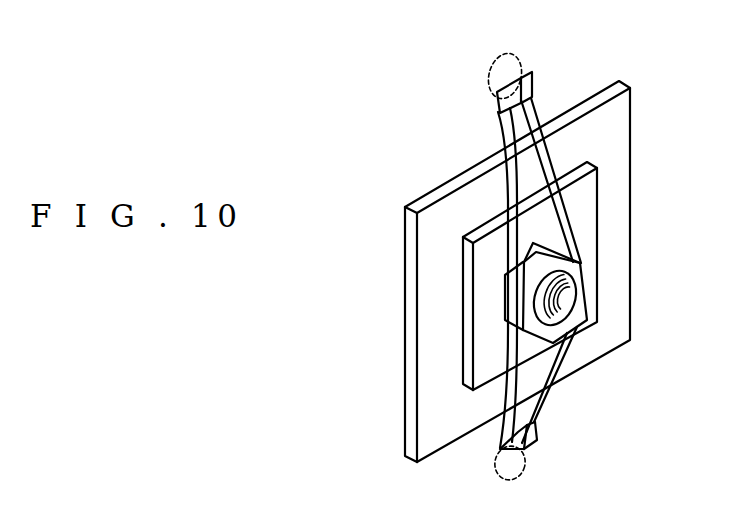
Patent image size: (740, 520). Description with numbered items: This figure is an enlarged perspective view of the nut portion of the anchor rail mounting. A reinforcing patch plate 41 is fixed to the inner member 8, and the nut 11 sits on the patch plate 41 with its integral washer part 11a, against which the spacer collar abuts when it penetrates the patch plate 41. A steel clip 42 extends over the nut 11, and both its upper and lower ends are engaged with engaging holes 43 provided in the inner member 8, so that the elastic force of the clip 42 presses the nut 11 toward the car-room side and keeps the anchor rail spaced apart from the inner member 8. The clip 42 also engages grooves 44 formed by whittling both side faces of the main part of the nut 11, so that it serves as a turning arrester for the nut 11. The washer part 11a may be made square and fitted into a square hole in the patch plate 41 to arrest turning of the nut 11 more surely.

The inner member 8 is at (433, 89).
The reinforcing patch plate 41 is at (433, 264).
The steel clip 42 is at (557, 157).
The engaging holes 43 is at (515, 100).
The grooves 44 is at (510, 293).
The nut 11 is at (582, 274).
The washer part 11a is at (490, 351).